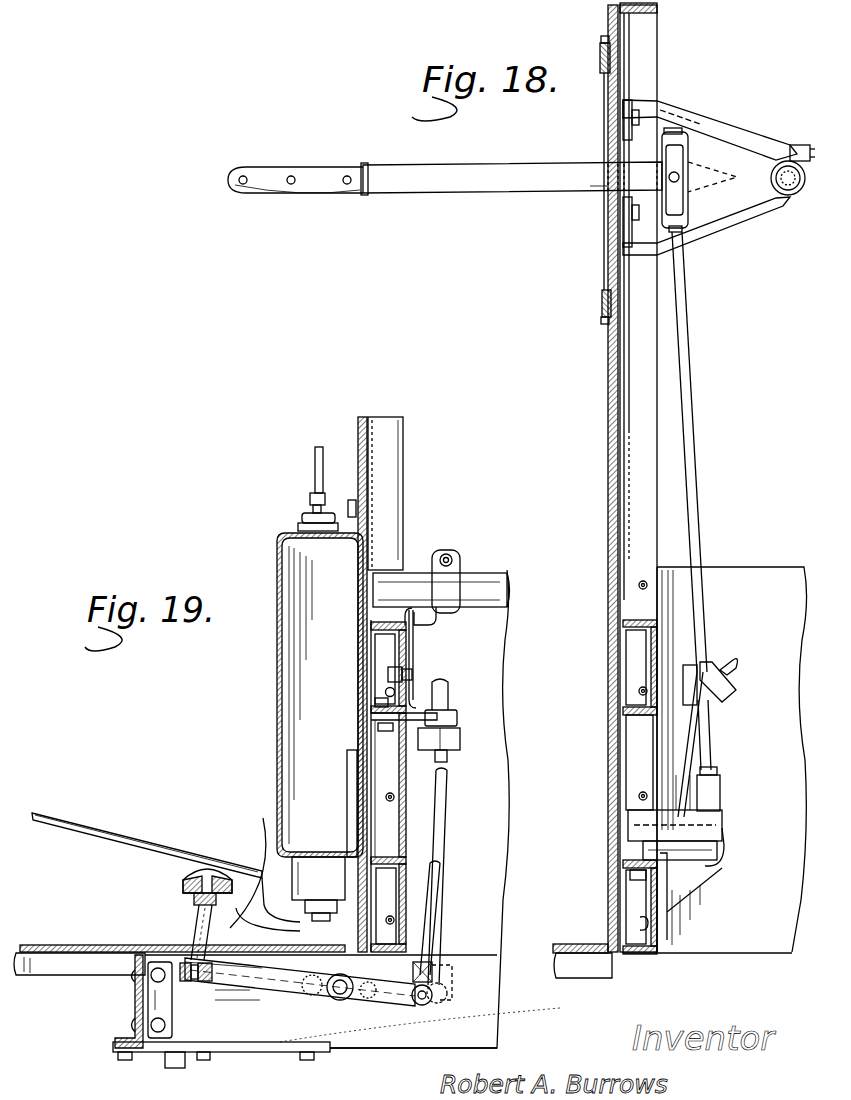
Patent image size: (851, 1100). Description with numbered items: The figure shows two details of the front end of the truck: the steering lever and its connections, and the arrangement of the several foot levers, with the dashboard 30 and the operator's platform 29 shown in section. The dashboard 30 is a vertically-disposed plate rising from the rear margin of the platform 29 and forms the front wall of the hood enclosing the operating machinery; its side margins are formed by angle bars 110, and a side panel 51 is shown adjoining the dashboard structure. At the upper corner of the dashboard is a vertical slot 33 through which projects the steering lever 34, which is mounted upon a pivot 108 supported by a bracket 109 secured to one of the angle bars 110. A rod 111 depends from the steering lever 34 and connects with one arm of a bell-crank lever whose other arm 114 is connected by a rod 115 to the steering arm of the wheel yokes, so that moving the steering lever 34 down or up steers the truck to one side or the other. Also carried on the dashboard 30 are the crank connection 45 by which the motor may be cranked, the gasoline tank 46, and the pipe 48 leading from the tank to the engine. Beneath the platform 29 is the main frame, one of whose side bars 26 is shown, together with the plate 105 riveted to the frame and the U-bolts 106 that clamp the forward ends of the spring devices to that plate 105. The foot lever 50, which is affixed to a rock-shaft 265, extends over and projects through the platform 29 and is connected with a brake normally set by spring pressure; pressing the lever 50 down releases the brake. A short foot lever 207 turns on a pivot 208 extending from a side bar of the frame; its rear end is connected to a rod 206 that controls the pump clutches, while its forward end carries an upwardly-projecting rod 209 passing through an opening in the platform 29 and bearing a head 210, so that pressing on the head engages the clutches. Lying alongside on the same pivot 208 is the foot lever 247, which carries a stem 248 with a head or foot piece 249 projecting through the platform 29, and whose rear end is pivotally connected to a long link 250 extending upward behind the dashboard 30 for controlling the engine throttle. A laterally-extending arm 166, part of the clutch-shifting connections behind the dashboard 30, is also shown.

In FIG. 19, the side bar 26 is at (498, 1035).
In FIG. 18, the platform 29 is at (565, 942).
In FIG. 19, the platform 29 is at (88, 942).
In FIG. 18, the dashboard 30 is at (607, 398).
In FIG. 19, the dashboard 30 is at (356, 425).
In FIG. 18, the vertical slot 33 is at (603, 62).
In FIG. 18, the steering lever 34 is at (479, 158).
In FIG. 19, the crank connection 45 is at (508, 604).
In FIG. 19, the gasoline tank 46 is at (276, 557).
In FIG. 19, the pipe 48 is at (314, 465).
In FIG. 19, the foot lever 50 is at (110, 832).
In FIG. 18, the side panel 51 is at (799, 578).
In FIG. 19, the plate 105 is at (330, 1053).
In FIG. 19, the U-bolts 106 is at (174, 1068).
In FIG. 18, the pivot 108 is at (789, 181).
In FIG. 18, the bracket 109 is at (718, 236).
In FIG. 18, the angle bar 110 is at (645, 305).
In FIG. 19, the angle bar 110 is at (410, 418).
In FIG. 18, the rod 111 is at (690, 334).
In FIG. 18, the arm 114 is at (688, 768).
In FIG. 18, the rod 115 is at (723, 696).
In FIG. 19, the laterally-extending arm 166 is at (448, 750).
In FIG. 19, the rod 206 is at (432, 868).
In FIG. 19, the foot lever 207 is at (295, 997).
In FIG. 19, the pivot 208 is at (340, 990).
In FIG. 19, the rod 209 is at (196, 925).
In FIG. 19, the head 210 is at (195, 880).
In FIG. 19, the foot lever 247 is at (258, 968).
In FIG. 19, the stem 248 is at (262, 863).
In FIG. 19, the head 249 is at (222, 876).
In FIG. 19, the long link 250 is at (443, 833).
In FIG. 19, the rock-shaft 265 is at (428, 985).